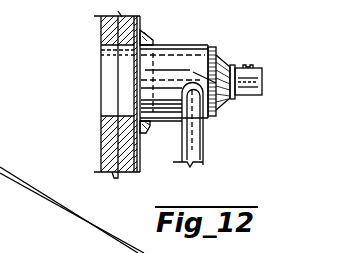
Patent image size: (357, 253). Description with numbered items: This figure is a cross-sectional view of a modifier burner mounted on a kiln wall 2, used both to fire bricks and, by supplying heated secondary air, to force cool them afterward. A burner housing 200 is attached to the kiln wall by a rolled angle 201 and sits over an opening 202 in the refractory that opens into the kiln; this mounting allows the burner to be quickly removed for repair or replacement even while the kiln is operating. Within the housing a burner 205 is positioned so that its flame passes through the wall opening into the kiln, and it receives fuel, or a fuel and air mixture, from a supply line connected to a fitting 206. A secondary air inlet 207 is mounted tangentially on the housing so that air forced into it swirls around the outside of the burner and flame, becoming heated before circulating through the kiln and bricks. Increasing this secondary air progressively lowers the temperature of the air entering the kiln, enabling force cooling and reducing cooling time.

The wall panel 2 is at (100, 22).
The burner housing 200 is at (227, 99).
The rolled angle 201 is at (145, 34).
The opening 202 is at (112, 114).
The burner 205 is at (190, 55).
The fitting 206 is at (255, 81).
The secondary air inlet 207 is at (199, 150).